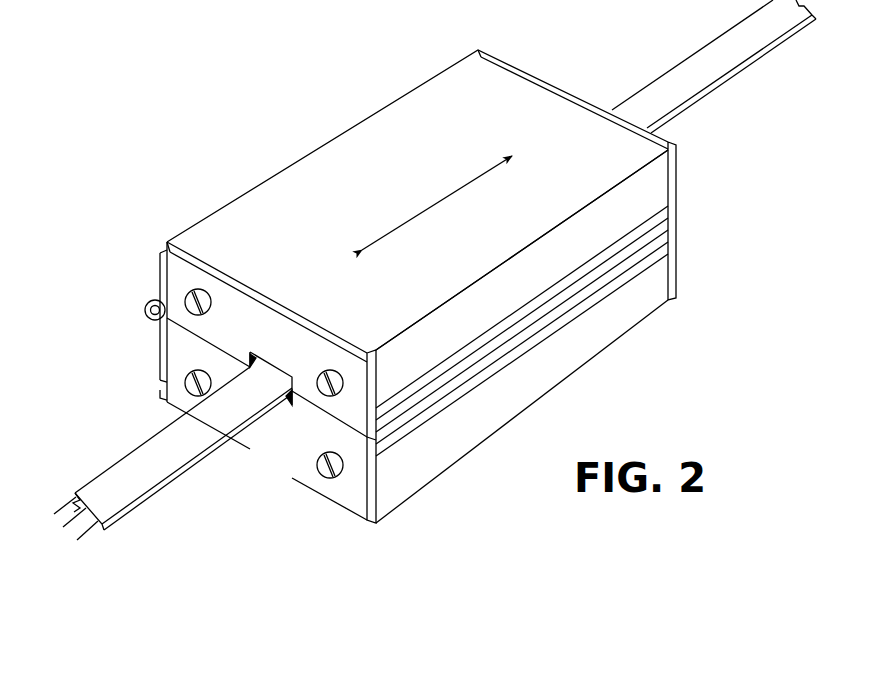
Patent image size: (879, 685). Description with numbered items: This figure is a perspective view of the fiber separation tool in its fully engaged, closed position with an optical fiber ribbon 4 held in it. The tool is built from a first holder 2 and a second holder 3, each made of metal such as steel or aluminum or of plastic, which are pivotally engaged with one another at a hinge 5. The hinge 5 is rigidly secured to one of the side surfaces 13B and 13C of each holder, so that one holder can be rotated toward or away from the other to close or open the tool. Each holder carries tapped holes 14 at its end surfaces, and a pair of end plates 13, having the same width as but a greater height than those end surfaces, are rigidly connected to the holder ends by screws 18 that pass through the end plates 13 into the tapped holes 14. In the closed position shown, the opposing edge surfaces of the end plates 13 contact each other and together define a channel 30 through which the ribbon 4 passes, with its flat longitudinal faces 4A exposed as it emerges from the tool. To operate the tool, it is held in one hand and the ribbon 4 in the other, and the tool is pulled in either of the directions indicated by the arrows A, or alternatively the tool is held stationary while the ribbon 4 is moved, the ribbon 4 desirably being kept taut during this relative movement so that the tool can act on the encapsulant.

The first holder 2 is at (421, 86).
The second holder 3 is at (475, 448).
The optical fiber ribbon 4 is at (172, 442).
The flat longitudinal faces 4A is at (116, 489).
The hinge 5 is at (145, 312).
The end plates 13 is at (677, 278).
The side surface 13B is at (166, 392).
The side surface 13C is at (312, 150).
The tapped holes 14 is at (190, 292).
The screws 18 is at (202, 290).
The channel 30 is at (280, 402).
The arrows A is at (440, 200).